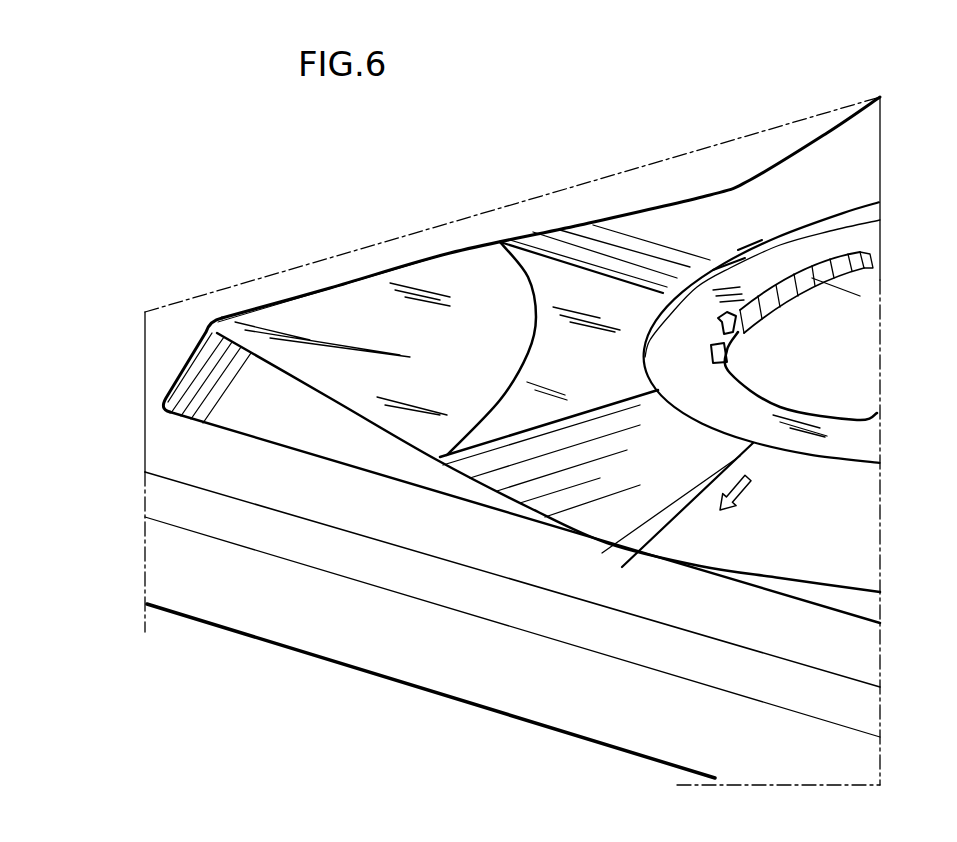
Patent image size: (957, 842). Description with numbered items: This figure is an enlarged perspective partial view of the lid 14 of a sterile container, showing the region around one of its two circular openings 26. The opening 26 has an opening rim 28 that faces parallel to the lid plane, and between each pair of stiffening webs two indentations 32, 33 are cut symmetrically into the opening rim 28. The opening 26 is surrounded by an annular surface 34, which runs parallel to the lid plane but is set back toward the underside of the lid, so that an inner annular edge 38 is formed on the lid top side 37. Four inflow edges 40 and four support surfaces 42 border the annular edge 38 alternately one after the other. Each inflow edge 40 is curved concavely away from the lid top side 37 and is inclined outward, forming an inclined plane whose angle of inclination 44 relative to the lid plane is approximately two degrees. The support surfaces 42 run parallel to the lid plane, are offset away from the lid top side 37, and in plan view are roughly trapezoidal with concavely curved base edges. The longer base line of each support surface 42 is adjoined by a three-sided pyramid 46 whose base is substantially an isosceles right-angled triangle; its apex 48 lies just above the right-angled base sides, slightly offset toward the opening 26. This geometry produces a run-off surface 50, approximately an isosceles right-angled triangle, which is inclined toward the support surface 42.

The lid 14 is at (164, 443).
The circular opening 26 is at (860, 296).
The opening rim 28 is at (753, 327).
The indentation 32 is at (877, 413).
The indentation 33 is at (727, 353).
The annular surface 34 is at (838, 447).
The lid top side 37 is at (588, 210).
The inner annular edge 38 is at (698, 273).
The inflow edge 40 is at (753, 205).
The support surface 42 is at (553, 277).
The angle of inclination 44 is at (612, 517).
The three-sided pyramid 46 is at (237, 304).
The apex 48 is at (216, 318).
The run-off surface 50 is at (463, 277).